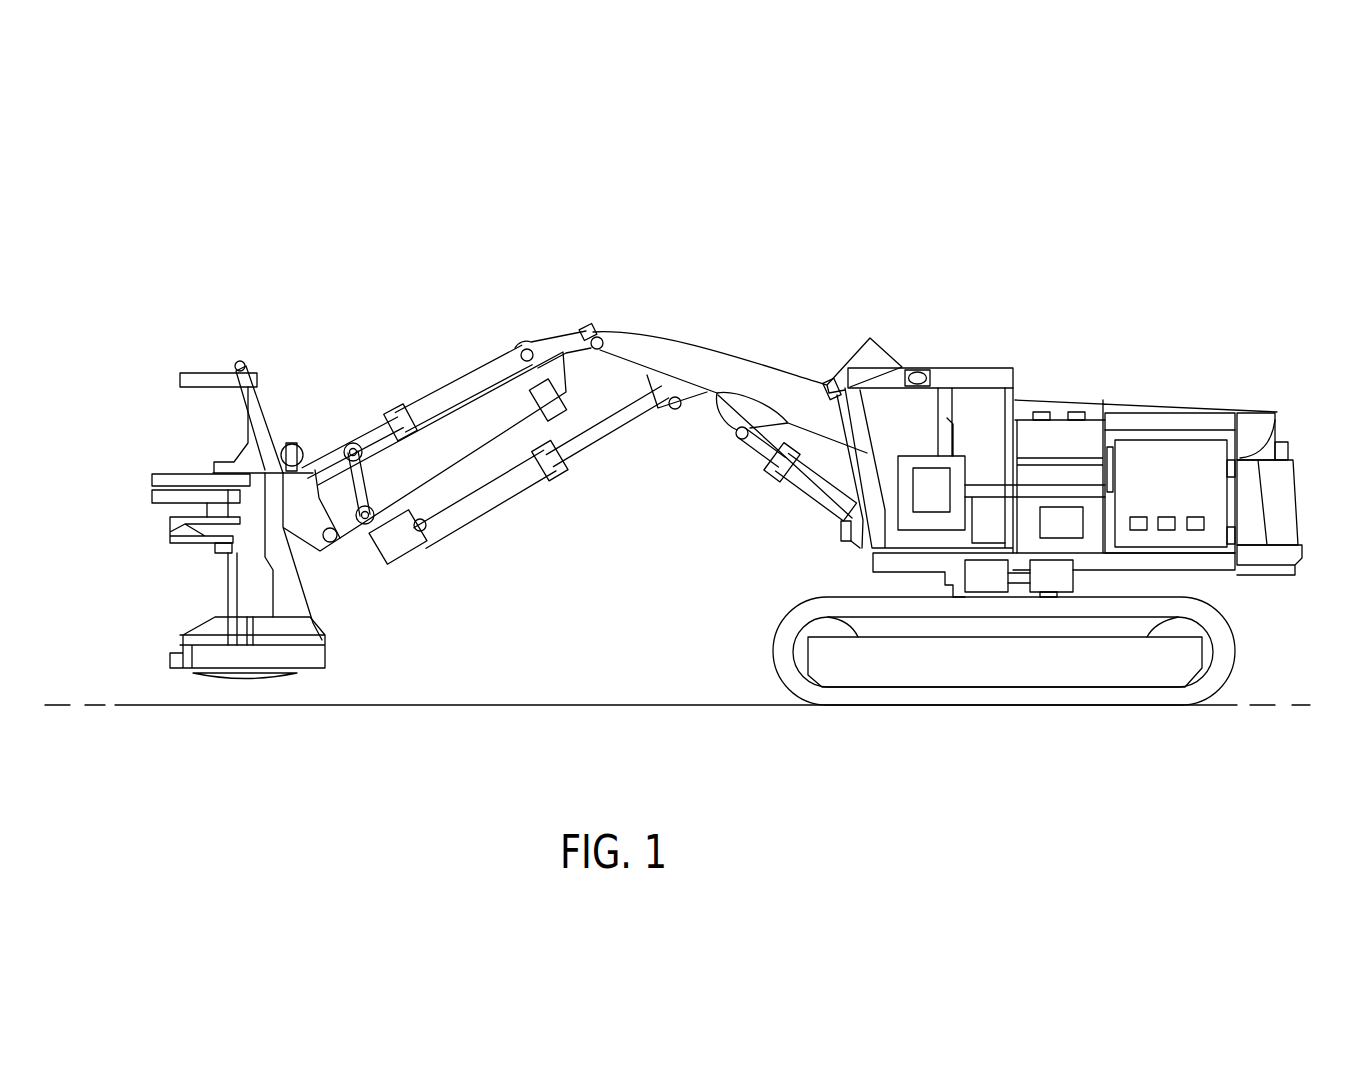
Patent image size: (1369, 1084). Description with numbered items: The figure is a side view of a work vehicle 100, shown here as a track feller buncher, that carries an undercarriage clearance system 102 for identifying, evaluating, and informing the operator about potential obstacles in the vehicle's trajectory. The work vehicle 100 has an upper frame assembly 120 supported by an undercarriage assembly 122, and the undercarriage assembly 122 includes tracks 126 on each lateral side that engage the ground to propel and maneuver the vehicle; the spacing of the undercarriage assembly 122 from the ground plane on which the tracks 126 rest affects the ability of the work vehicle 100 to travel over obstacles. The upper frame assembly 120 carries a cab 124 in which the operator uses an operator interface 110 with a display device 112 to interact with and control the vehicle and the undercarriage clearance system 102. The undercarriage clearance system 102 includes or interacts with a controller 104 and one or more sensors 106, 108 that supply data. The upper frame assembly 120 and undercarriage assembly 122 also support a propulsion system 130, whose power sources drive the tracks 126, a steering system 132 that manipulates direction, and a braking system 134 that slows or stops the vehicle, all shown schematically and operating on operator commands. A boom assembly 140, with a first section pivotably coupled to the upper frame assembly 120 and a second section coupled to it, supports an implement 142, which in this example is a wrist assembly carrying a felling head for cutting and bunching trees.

The work vehicle 100 is at (1133, 162).
The undercarriage clearance system 102 is at (995, 507).
The controller 104 is at (1073, 538).
The sensor 106 is at (987, 593).
The sensor 108 is at (1052, 593).
The operator interface 110 is at (928, 516).
The display device 112 is at (856, 543).
The upper frame assembly 120 is at (1297, 470).
The undercarriage assembly 122 is at (773, 650).
The cab 124 is at (897, 398).
The tracks 126 is at (1025, 702).
The propulsion system 130 is at (1136, 516).
The steering system 132 is at (1166, 516).
The braking system 134 is at (1199, 516).
The boom assembly 140 is at (719, 324).
The implement 142 is at (348, 615).